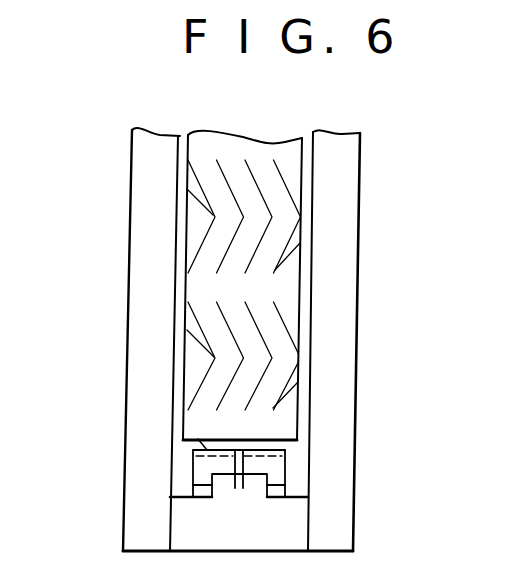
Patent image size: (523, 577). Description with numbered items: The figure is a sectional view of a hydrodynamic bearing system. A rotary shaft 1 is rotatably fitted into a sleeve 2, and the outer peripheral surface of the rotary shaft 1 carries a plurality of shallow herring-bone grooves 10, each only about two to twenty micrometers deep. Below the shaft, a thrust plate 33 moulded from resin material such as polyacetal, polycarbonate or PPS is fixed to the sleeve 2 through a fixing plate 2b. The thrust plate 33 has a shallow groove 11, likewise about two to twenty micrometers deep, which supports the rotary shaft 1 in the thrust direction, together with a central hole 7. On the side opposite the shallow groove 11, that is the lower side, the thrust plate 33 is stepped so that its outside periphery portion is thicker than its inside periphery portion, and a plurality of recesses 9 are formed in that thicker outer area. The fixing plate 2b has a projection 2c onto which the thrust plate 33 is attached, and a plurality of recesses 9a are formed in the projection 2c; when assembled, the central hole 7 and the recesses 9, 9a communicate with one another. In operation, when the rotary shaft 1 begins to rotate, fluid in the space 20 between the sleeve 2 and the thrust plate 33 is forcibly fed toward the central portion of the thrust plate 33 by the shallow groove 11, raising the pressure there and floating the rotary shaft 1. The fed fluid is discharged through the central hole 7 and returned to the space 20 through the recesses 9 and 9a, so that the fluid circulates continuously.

The rotary shaft 1 is at (288, 280).
The sleeve 2 is at (347, 213).
The fixing plate 2b is at (282, 532).
The projection 2c is at (256, 494).
The central hole 7 is at (243, 452).
The recesses 9 is at (213, 485).
The recesses 9a is at (233, 482).
The herring-bone grooves 10 is at (200, 228).
The shallow groove 11 is at (207, 450).
The space 20 is at (300, 480).
The thrust plate 33 is at (273, 467).